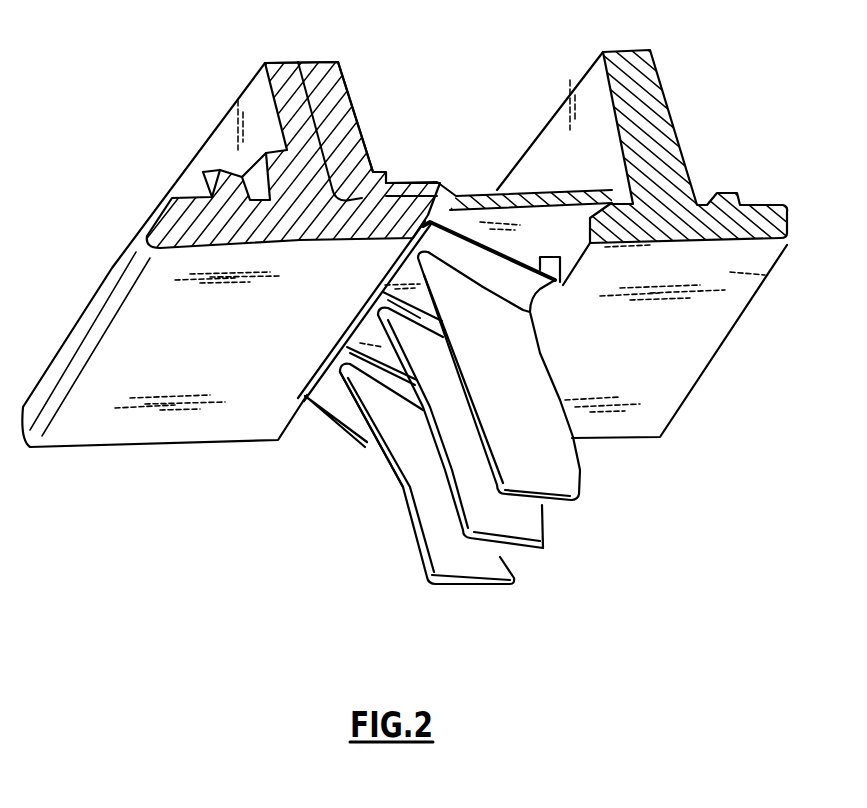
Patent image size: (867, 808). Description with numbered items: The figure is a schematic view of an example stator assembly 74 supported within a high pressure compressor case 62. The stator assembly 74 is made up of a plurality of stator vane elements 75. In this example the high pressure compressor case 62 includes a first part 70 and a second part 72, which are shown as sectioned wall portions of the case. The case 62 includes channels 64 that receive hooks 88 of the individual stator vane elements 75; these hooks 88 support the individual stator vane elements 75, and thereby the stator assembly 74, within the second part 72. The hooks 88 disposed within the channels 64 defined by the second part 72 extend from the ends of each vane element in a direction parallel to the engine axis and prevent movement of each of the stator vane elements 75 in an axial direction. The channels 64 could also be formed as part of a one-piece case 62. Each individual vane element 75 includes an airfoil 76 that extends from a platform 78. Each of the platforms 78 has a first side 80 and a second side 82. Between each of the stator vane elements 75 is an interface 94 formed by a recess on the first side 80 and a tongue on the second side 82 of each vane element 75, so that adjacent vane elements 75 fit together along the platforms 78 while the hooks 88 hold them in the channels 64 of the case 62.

The high pressure compressor case 62 is at (140, 92).
The channels 64 is at (364, 208).
The first part 70 is at (286, 75).
The second part 72 is at (340, 97).
The stator assembly 74 is at (316, 480).
The stator vane elements 75 is at (375, 277).
The airfoil 76 is at (477, 500).
The platform 78 is at (421, 250).
The first side 80 is at (308, 420).
The second side 82 is at (505, 240).
The hooks 88 is at (388, 207).
The interface 94 is at (347, 342).